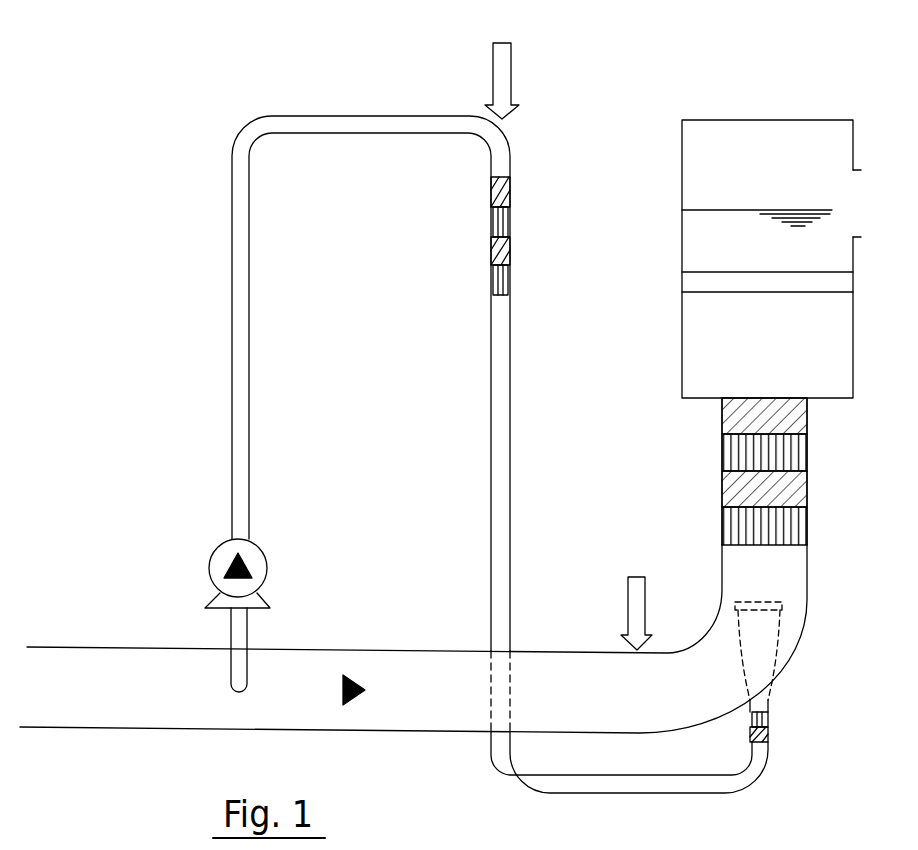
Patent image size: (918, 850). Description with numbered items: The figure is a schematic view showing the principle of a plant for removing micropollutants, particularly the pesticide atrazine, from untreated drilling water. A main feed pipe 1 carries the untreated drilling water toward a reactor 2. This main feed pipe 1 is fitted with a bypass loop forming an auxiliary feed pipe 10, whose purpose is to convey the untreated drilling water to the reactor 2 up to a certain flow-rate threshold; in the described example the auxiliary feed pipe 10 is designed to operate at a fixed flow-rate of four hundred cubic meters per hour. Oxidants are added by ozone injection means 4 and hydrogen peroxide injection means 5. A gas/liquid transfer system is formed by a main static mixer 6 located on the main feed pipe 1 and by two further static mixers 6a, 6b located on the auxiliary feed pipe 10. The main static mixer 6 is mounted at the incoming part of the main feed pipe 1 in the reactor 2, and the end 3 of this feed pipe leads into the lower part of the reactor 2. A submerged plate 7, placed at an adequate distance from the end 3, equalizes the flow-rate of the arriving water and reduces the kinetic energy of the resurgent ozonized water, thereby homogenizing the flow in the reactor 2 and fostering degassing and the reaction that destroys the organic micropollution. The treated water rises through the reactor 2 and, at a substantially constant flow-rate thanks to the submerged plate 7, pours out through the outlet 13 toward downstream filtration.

The main feed pipe 1 is at (408, 660).
The reactor 2 is at (682, 348).
The end of the feed pipe 3 is at (766, 393).
The ozone injection means 4 is at (480, 78).
The hydrogen peroxide injection means 5 is at (634, 515).
The main static mixer 6 is at (793, 528).
The static mixer 6a is at (494, 280).
The static mixer 6b is at (767, 730).
The submerged plate 7 is at (682, 285).
The auxiliary feed pipe 10 is at (237, 309).
The outlet 13 is at (845, 198).